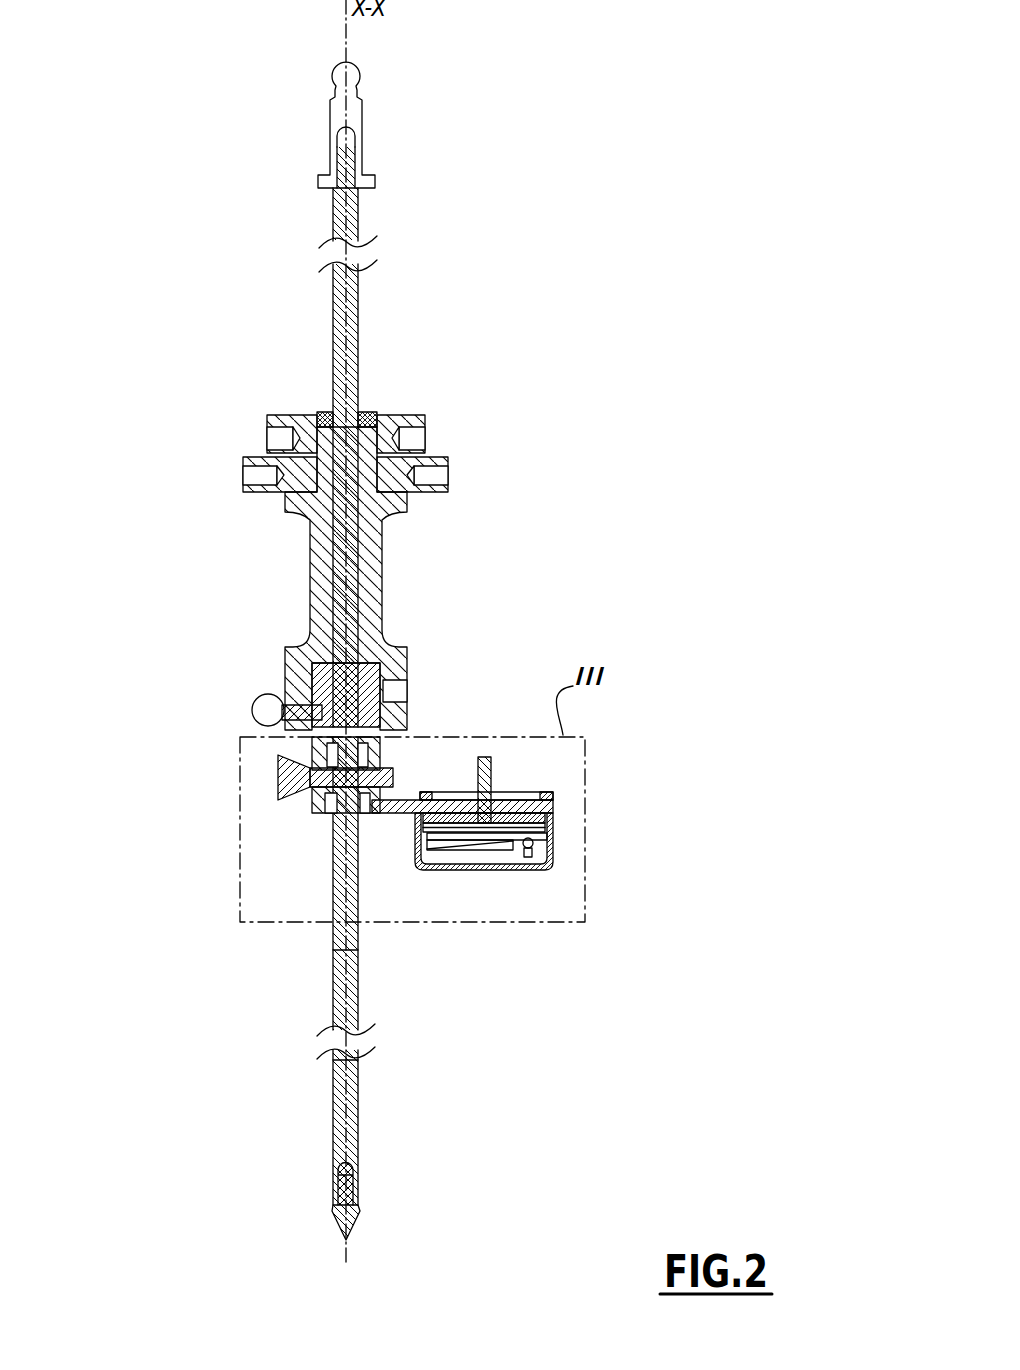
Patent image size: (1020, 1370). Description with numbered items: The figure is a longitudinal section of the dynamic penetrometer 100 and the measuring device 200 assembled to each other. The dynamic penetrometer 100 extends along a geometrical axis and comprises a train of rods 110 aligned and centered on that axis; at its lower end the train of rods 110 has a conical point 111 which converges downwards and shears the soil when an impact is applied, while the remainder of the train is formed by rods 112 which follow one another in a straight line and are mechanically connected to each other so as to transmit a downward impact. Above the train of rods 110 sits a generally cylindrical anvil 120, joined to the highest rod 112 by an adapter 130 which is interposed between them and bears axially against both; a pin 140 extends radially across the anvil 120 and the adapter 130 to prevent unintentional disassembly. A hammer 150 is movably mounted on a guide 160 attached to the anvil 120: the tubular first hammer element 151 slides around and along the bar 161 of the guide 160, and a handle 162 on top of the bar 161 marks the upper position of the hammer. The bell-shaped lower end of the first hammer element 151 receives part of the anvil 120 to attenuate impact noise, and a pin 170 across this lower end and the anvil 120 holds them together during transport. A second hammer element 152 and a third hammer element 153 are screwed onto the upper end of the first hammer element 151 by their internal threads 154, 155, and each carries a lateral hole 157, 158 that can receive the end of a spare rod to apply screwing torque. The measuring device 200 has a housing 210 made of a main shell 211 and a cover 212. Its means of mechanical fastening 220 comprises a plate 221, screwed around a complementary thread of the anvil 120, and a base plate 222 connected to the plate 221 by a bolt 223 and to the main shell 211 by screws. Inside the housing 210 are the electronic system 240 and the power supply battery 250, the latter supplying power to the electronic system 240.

The dynamic penetrometer 100 is at (456, 190).
The train of rods 110 is at (237, 988).
The point 111 is at (333, 1205).
The rods 112 is at (342, 902).
The anvil 120 is at (300, 747).
The adapter 130 is at (314, 826).
The pin 140 is at (282, 778).
The hammer 150 is at (383, 535).
The first hammer element 151 is at (373, 567).
The second hammer element 152 is at (367, 464).
The third hammer element 153 is at (360, 426).
The internal thread 154 is at (318, 493).
The internal thread 155 is at (323, 411).
The lateral hole 157 is at (268, 487).
The lateral hole 158 is at (290, 446).
The guide 160 is at (270, 394).
The bar 161 is at (340, 298).
The handle 162 is at (342, 115).
The pin 170 is at (258, 694).
The measuring device 200 is at (496, 803).
The housing 210 is at (573, 864).
The main shell 211 is at (552, 835).
The cover 212 is at (538, 868).
The means of mechanical fastening 220 is at (562, 730).
The plate 221 is at (553, 803).
The base plate 222 is at (553, 820).
The bolt 223 is at (492, 767).
The electronic system 240 is at (475, 866).
The power supply battery 250 is at (527, 860).